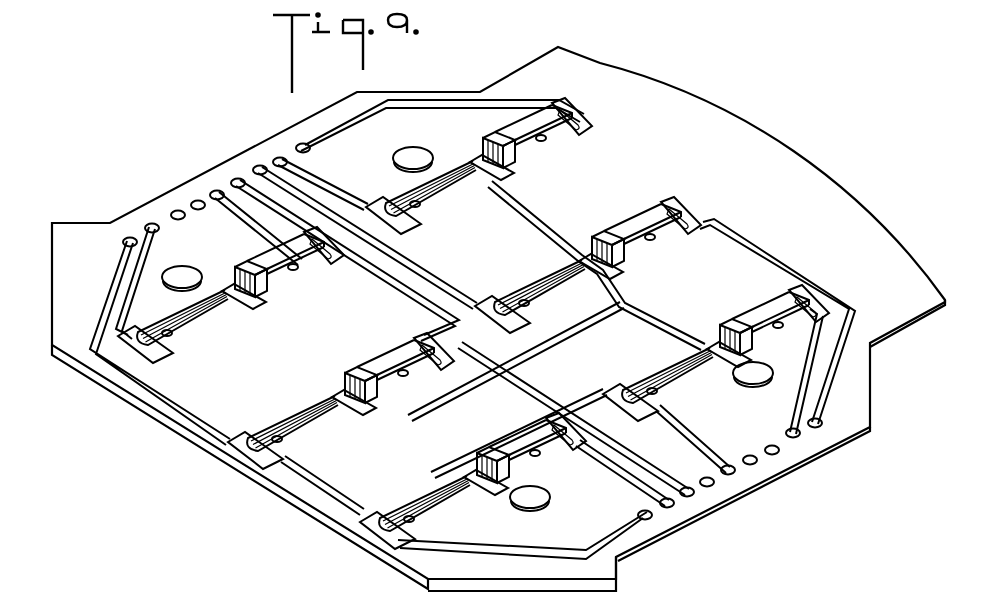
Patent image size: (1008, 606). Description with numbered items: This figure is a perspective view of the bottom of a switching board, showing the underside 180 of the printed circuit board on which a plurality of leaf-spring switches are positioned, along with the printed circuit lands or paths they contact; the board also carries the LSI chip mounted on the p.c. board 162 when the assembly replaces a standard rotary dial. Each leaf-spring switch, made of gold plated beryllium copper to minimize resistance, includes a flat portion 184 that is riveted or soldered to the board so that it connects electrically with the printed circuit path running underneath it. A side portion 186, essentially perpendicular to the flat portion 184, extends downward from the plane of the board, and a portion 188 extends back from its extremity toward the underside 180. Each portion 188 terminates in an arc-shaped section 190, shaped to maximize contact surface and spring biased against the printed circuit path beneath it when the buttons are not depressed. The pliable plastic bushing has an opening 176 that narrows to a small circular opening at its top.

The p.c. board 162 is at (798, 465).
The opening 176 is at (432, 204).
The underside 180 is at (782, 145).
The flat portion 184 is at (510, 167).
The side portion 186 is at (464, 158).
The portion 188 is at (417, 183).
The arc-shaped section 190 is at (420, 226).